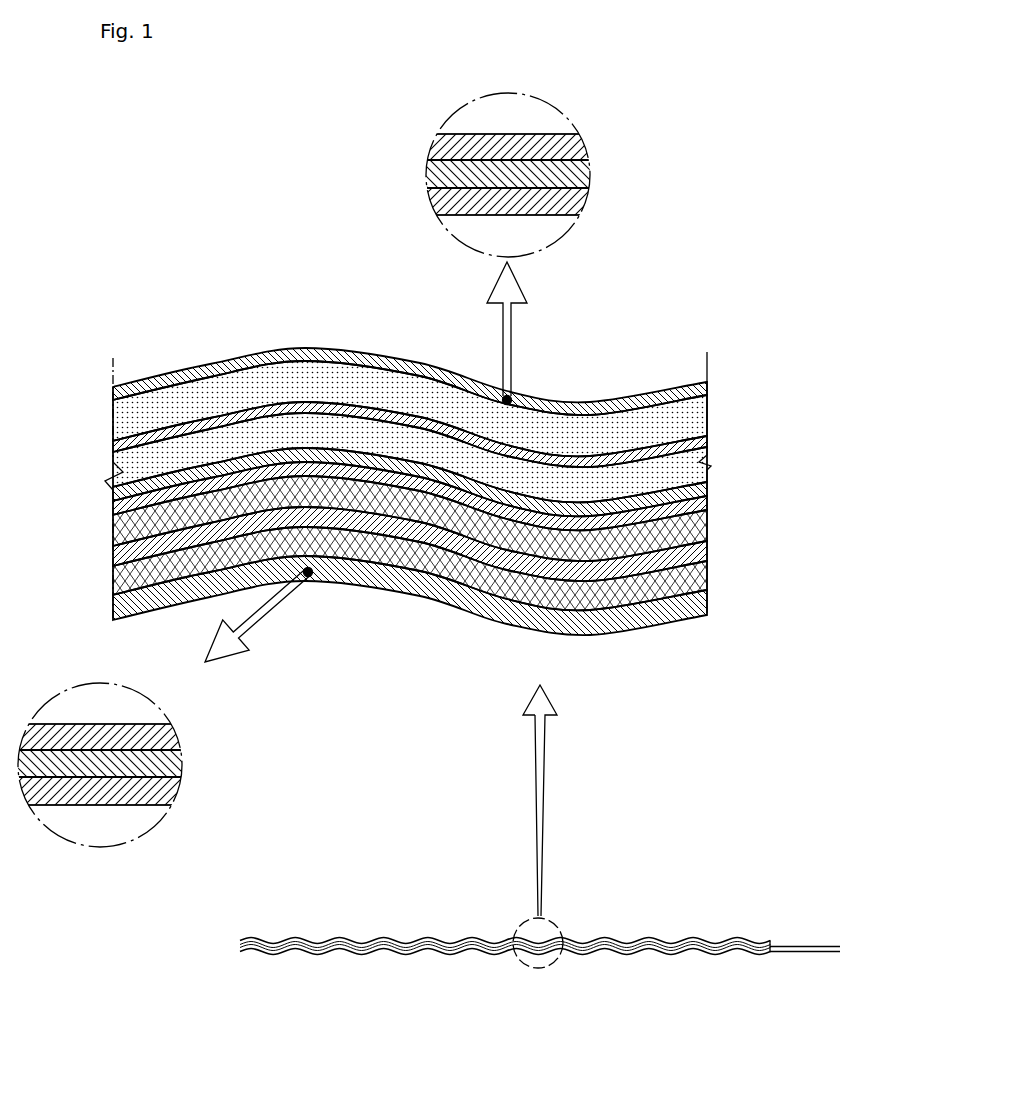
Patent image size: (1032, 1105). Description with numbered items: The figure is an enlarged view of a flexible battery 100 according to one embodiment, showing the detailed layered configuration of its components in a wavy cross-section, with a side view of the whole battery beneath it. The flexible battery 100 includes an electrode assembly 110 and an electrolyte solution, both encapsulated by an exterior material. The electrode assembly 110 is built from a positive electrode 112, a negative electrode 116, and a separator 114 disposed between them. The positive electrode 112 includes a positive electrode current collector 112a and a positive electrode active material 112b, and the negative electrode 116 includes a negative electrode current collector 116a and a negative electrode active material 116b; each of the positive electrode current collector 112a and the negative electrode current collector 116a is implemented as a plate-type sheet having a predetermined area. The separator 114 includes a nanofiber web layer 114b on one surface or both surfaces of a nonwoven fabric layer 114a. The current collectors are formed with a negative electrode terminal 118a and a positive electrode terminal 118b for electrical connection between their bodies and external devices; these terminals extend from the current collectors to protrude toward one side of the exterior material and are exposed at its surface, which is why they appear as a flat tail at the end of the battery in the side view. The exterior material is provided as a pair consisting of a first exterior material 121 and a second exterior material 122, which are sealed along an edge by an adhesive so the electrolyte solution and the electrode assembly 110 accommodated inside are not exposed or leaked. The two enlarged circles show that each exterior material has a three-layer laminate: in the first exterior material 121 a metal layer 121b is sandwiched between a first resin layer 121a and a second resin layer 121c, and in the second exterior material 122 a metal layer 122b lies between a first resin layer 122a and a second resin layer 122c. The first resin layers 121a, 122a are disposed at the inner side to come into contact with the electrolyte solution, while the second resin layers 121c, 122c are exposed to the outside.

The flexible battery 100 is at (474, 573).
The electrode assembly 110 is at (525, 494).
The positive electrode 112 is at (494, 552).
The positive electrode current collector 112a is at (707, 558).
The positive electrode active material 112b is at (707, 530).
The separator 114 is at (492, 490).
The nonwoven fabric layer 114a is at (707, 487).
The nanofiber web layer 114b is at (707, 502).
The negative electrode 116 is at (494, 431).
The negative electrode current collector 116a is at (705, 440).
The negative electrode active material 116b is at (703, 416).
The negative electrode terminal 118a is at (805, 947).
The positive electrode terminal 118b is at (815, 952).
The first exterior material 121 is at (454, 515).
The first resin layer 121a is at (508, 201).
The metal layer 121b is at (508, 174).
The second resin layer 121c is at (576, 147).
The second exterior material 122 is at (405, 805).
The first resin layer 122a is at (100, 737).
The metal layer 122b is at (100, 763).
The second resin layer 122c is at (100, 791).